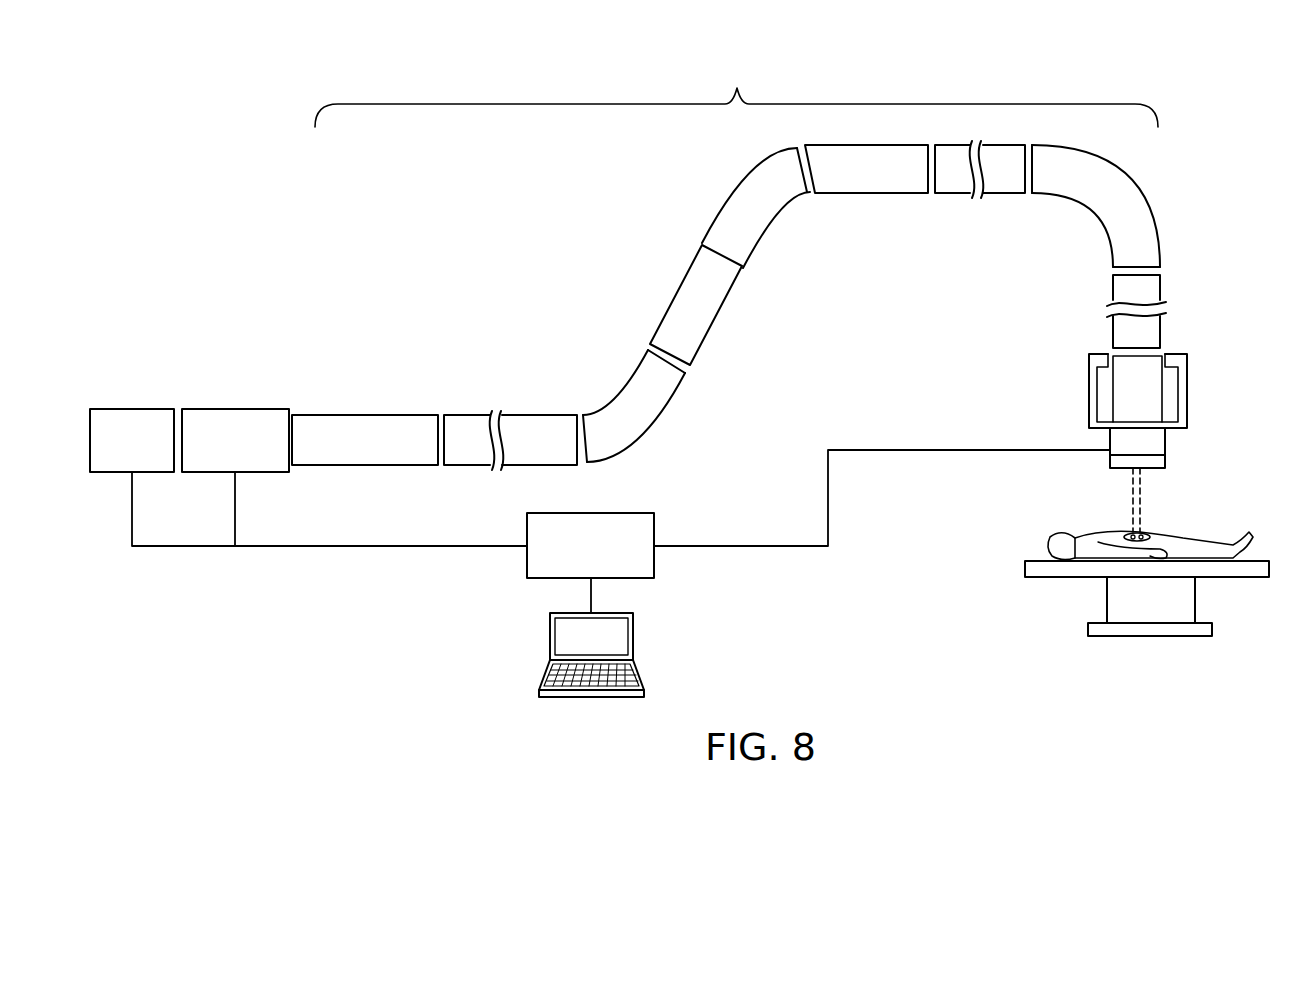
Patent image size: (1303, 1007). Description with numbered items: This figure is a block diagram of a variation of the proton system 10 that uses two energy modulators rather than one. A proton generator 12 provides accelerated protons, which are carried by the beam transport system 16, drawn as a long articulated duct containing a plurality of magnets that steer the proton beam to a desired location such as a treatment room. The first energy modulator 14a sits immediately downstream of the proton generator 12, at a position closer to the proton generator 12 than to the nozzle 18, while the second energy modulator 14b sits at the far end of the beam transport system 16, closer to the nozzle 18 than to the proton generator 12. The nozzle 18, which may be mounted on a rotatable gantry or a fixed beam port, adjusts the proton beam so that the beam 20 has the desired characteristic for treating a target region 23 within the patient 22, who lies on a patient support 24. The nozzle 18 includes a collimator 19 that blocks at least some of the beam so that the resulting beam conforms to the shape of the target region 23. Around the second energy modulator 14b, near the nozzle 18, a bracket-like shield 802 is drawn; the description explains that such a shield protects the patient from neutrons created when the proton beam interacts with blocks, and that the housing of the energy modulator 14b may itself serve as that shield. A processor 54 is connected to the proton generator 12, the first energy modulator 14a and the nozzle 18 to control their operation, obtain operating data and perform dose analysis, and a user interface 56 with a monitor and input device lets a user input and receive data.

The proton system 10 is at (1232, 120).
The proton generator 12 is at (118, 452).
The first energy modulator 14a is at (216, 452).
The second energy modulator 14b is at (1162, 380).
The beam transport system 16 is at (729, 266).
The nozzle 18 is at (1110, 443).
The collimator 19 is at (1165, 462).
The beam 20 is at (1142, 507).
The patient 22 is at (1247, 541).
The target region 23 is at (1125, 533).
The patient support 24 is at (1250, 571).
The processor 54 is at (576, 562).
The user interface 56 is at (644, 675).
The mounting bracket 802 is at (1089, 378).